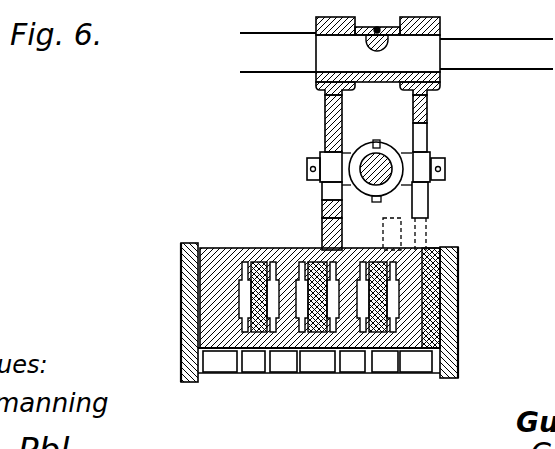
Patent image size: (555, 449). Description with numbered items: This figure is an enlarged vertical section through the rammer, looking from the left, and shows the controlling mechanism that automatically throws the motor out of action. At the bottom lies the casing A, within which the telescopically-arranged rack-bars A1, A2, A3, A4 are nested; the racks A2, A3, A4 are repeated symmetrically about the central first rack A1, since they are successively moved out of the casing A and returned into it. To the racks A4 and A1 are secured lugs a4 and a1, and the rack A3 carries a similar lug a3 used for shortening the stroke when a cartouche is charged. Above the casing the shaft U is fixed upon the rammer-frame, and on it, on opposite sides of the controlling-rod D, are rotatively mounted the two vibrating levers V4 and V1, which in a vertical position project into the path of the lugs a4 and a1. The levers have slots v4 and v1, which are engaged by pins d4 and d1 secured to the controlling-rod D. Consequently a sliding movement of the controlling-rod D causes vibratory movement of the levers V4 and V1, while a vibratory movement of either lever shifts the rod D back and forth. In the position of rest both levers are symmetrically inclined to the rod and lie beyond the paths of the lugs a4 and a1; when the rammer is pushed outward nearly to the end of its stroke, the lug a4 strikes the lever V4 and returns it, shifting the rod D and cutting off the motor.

The shaft U is at (428, 52).
The vibrating lever V1 is at (325, 102).
The vibrating lever V4 is at (426, 117).
The controlling-rod D is at (370, 162).
The pin d1 is at (307, 169).
The pin d4 is at (445, 169).
The slot v1 is at (322, 193).
The slot v4 is at (428, 197).
The lug a1 is at (322, 233).
The lug a3 is at (383, 230).
The lug a4 is at (427, 233).
The casing A is at (458, 290).
The rack-bar A1 is at (320, 352).
The rack-bar A2 is at (356, 352).
The rack-bar A3 is at (390, 352).
The rack-bar A4 is at (425, 352).